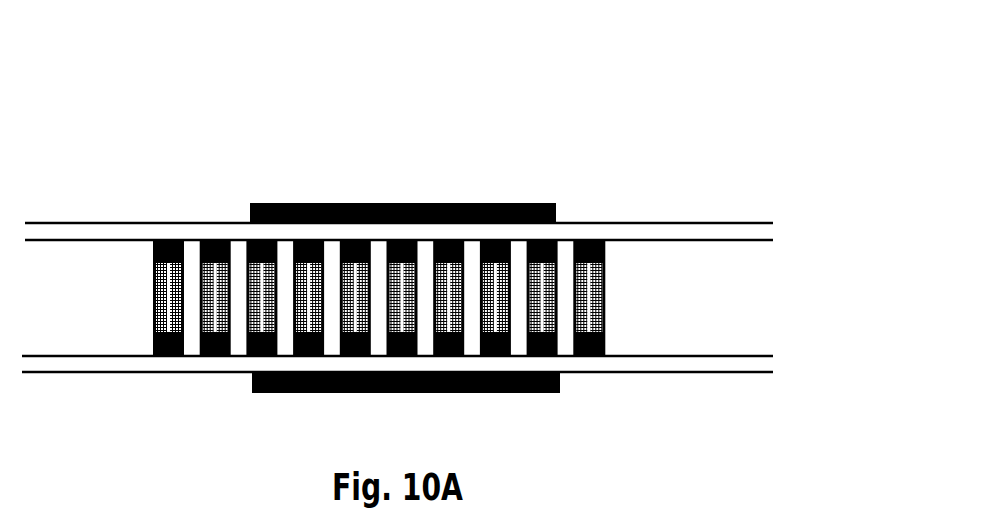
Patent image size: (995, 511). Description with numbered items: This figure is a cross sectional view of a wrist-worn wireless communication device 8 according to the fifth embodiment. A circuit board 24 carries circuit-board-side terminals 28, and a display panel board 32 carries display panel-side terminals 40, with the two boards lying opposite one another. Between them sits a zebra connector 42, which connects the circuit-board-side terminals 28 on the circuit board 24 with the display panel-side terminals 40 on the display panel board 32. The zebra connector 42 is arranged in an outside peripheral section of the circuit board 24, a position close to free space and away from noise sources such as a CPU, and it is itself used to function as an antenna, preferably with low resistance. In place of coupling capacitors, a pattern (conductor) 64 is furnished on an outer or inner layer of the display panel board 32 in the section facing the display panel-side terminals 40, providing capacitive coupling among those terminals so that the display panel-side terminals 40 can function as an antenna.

The wrist-worn wireless communication device 8 is at (602, 130).
The circuit board 24 is at (702, 366).
The circuit-board-side terminals 28 is at (605, 343).
The display panel board 32 is at (686, 233).
The display panel-side terminals 40 is at (605, 250).
The zebra connector 42 is at (605, 303).
The pattern (conductor) 64 is at (262, 203).